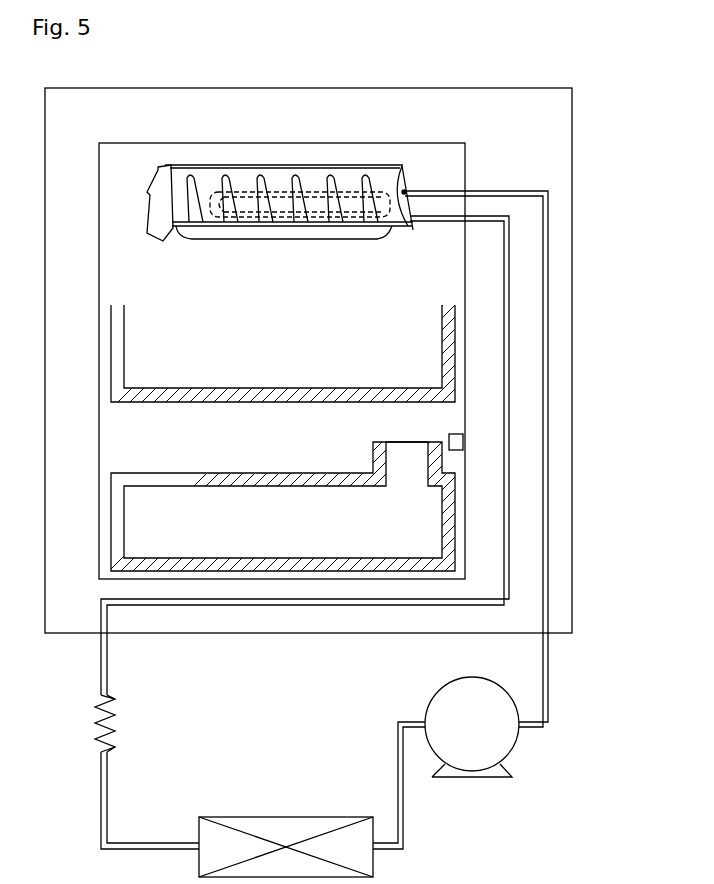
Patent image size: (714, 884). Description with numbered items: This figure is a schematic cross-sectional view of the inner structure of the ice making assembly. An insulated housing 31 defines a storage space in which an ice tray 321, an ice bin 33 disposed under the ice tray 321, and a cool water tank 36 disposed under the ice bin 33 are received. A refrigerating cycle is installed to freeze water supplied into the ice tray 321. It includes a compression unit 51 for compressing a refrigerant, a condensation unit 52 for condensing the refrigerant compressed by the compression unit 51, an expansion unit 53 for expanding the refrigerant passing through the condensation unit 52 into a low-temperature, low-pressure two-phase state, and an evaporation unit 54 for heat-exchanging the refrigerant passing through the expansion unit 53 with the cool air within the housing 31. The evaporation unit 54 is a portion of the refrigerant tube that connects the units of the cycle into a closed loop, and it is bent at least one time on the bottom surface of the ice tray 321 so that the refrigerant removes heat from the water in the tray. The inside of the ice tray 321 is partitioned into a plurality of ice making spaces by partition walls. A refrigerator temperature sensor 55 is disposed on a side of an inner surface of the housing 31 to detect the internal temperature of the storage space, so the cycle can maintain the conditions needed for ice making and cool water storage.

The housing 31 is at (552, 157).
The ice tray 321 is at (313, 178).
The evaporation unit 54 is at (247, 191).
The ice bin 33 is at (455, 351).
The refrigerator temperature sensor 55 is at (463, 441).
The cool water tank 36 is at (453, 523).
The expansion unit 53 is at (95, 718).
The condensation unit 52 is at (288, 817).
The compression unit 51 is at (506, 740).